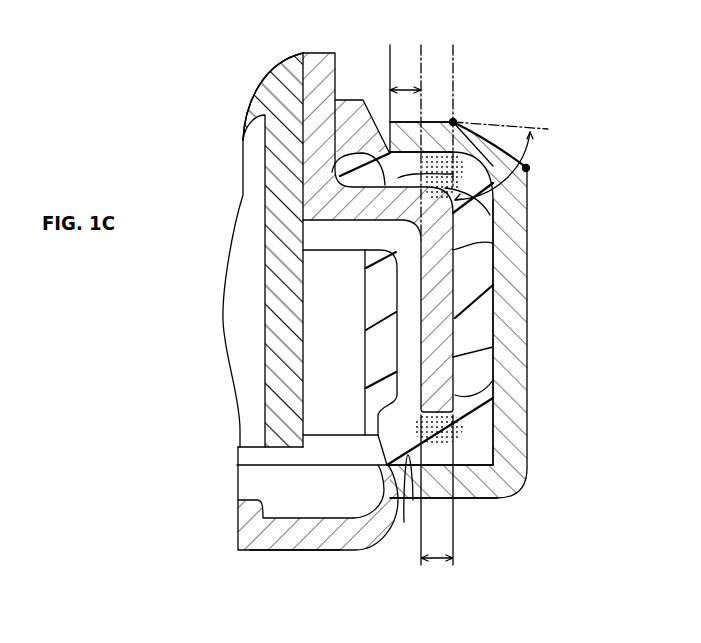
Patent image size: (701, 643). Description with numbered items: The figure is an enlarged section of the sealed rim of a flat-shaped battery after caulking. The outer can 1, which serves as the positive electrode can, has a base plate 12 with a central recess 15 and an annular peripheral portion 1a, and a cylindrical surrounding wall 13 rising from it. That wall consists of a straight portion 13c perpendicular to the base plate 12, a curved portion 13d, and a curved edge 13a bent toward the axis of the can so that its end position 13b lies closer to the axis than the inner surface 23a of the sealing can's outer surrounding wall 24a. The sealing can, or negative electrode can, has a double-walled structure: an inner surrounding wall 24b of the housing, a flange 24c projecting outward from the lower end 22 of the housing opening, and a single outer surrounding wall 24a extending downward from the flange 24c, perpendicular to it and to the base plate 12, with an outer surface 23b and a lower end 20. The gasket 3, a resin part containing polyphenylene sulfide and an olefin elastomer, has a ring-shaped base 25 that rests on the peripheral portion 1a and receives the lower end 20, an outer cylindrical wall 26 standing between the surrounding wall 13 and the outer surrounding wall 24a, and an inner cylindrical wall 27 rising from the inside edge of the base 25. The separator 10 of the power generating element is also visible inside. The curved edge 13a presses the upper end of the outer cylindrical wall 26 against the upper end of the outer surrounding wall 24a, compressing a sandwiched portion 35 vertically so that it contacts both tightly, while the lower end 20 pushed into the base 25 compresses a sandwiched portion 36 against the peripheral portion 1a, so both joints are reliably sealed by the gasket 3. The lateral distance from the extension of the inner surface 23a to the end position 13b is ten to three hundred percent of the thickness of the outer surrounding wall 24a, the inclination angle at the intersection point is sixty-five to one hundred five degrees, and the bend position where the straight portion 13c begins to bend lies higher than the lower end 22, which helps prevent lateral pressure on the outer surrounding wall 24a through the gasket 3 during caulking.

The outer can 1 is at (314, 553).
The annular peripheral portion 1a is at (405, 499).
The gasket 3 is at (490, 293).
The separator 10 is at (272, 181).
The base plate 12 is at (288, 551).
The surrounding wall 13 is at (467, 270).
The curved edge 13a is at (453, 42).
The end position 13b is at (390, 104).
The straight portion 13c is at (512, 347).
The curved portion 13d is at (512, 140).
The recess 15 is at (240, 500).
The lower end 20 is at (483, 425).
The lower end of the opening 22 is at (270, 208).
The inner surface 23a is at (413, 287).
The outer surface 23b is at (490, 248).
The outer surrounding wall 24a is at (440, 333).
The inner surrounding wall 24b is at (328, 77).
The flange 24c is at (272, 152).
The base 25 is at (473, 462).
The outer cylindrical wall 26 is at (480, 393).
The inner cylindrical wall 27 is at (373, 322).
The sandwiched portion 35 is at (422, 172).
The sandwiched portion 36 is at (437, 478).